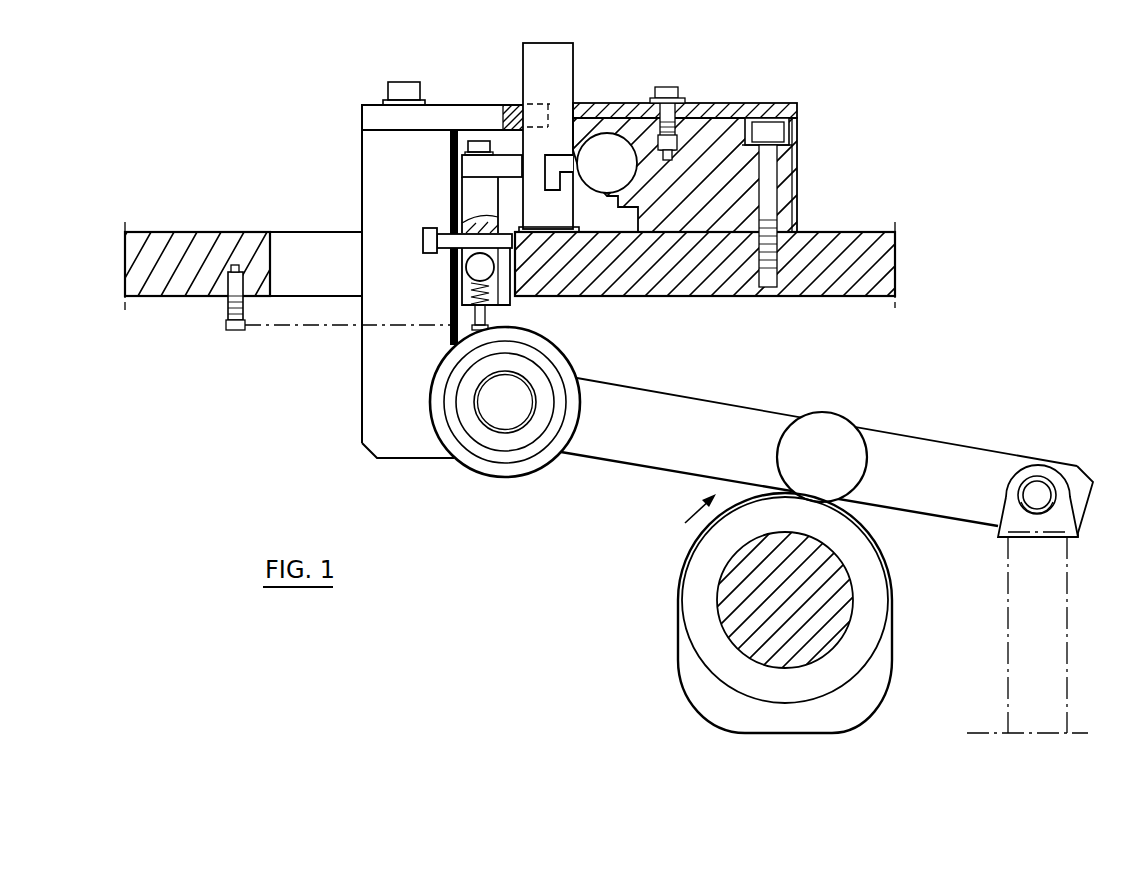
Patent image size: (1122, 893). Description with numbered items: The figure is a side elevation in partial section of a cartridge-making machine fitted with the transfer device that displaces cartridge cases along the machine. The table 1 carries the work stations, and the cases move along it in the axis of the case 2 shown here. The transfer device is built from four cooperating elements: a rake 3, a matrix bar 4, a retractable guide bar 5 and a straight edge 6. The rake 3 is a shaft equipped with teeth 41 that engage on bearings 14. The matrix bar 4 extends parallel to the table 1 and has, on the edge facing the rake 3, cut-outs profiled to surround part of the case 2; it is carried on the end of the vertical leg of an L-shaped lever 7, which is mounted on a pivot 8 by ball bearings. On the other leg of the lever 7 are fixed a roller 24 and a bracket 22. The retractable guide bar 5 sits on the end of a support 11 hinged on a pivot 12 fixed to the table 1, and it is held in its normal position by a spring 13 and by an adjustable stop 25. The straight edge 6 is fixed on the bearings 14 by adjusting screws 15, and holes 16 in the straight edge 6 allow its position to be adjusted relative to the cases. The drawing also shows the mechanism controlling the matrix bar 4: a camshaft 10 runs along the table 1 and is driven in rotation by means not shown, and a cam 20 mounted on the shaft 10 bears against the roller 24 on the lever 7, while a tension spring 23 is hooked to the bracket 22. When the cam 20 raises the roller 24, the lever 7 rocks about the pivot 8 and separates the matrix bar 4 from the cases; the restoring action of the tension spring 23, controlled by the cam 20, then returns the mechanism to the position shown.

The table 1 is at (872, 245).
The case 2 is at (532, 83).
The rake 3 is at (603, 147).
The matrix bar 4 is at (455, 108).
The retractable guide bar 5 is at (465, 167).
The straight edge 6 is at (635, 103).
The L-shaped lever 7 is at (362, 392).
The pivot 8 is at (517, 412).
The camshaft 10 is at (742, 627).
The support 11 is at (472, 197).
The pivot 12 is at (486, 267).
The spring 13 is at (310, 330).
The bearings 14 is at (732, 177).
The adjusting screws 15 is at (680, 97).
The holes 16 is at (690, 103).
The cam 20 is at (702, 692).
The bracket 22 is at (1037, 487).
The tension spring 23 is at (1008, 642).
The roller 24 is at (840, 432).
The adjustable stop 25 is at (428, 253).
The teeth 41 is at (562, 163).